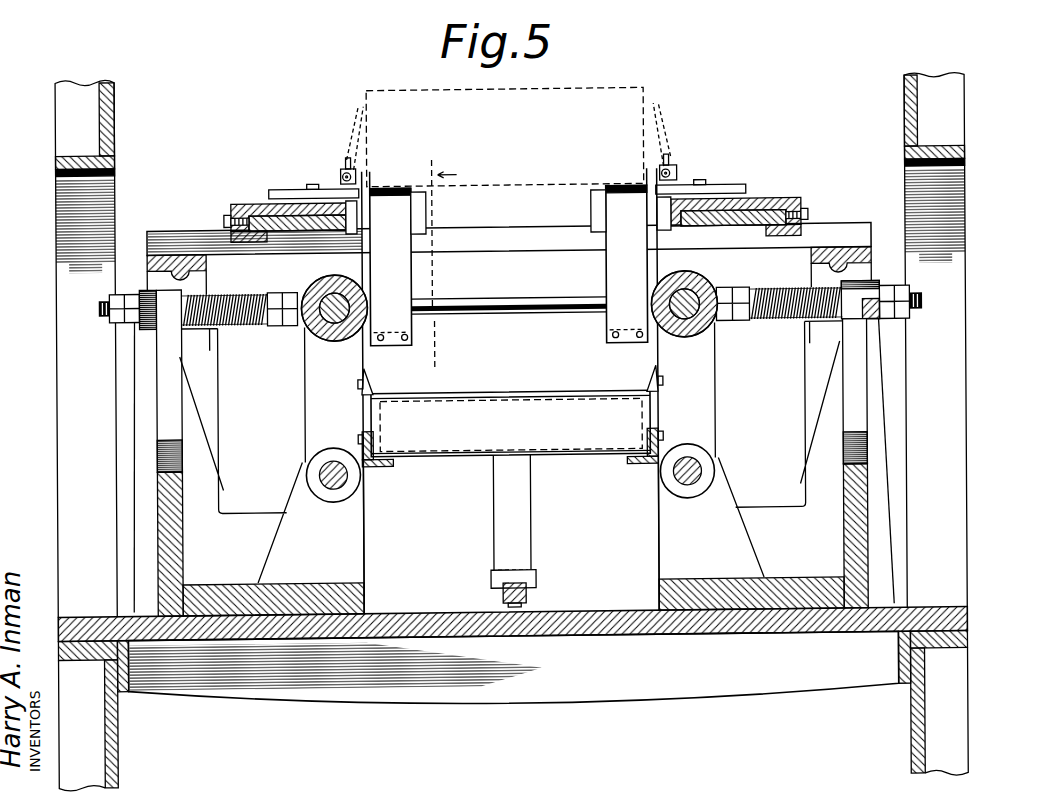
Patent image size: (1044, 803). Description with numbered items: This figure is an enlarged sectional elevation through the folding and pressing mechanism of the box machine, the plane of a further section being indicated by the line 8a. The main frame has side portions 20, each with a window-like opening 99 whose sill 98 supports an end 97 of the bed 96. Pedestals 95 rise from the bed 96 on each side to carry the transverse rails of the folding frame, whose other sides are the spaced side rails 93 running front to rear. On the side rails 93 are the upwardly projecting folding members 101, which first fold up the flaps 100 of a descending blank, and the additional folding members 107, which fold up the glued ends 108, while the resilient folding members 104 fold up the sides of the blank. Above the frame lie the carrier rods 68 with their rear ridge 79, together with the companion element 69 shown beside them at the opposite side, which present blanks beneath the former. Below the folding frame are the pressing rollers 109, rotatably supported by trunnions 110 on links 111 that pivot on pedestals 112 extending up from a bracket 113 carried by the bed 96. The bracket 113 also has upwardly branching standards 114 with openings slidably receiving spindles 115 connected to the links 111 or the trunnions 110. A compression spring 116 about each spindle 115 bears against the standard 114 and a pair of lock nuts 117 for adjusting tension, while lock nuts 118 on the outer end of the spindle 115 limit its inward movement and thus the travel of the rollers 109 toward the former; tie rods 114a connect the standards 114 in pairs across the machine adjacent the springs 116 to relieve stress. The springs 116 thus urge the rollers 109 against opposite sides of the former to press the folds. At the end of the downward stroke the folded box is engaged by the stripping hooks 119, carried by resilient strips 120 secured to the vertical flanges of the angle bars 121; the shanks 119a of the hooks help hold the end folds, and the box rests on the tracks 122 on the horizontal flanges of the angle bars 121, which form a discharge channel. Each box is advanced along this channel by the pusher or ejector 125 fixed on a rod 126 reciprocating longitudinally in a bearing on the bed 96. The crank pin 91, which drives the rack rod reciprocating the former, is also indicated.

The side portions 20 is at (127, 123).
The window-like openings 99 is at (957, 500).
The ends 97 is at (967, 618).
The bed 96 is at (445, 612).
The sills 98 is at (967, 641).
The crank pin 91 is at (195, 229).
The pedestals 95 is at (148, 256).
The side rails 93 is at (265, 210).
The folding members 101 is at (362, 183).
The ends of the box 108 is at (292, 177).
The carrier rods 68 is at (342, 178).
The latch 69 is at (678, 178).
The second elongated projection or ridge 79 is at (348, 166).
The flaps 100 is at (305, 103).
The section line 8a is at (441, 262).
The resilient strips 120 is at (368, 417).
The stripping elements or hooks 119 is at (372, 390).
The shanks 119a is at (376, 392).
The tracks or strips 122 is at (397, 461).
The angle bars 121 is at (388, 469).
The folding members 104 is at (410, 279).
The additional folding members 107 is at (367, 225).
The tie rods 114a is at (520, 308).
The spindles 115 is at (100, 306).
The lock nuts 118 is at (118, 317).
The standards 114 is at (165, 334).
The compression spring 116 is at (240, 279).
The lock nuts 117 is at (293, 289).
The links 111 is at (305, 405).
The trunnions 110 is at (320, 328).
The rollers 109 is at (330, 343).
The pedestals 112 is at (302, 483).
The bracket 113 is at (157, 519).
The pusher or ejector 125 is at (525, 502).
The rod 126 is at (532, 594).